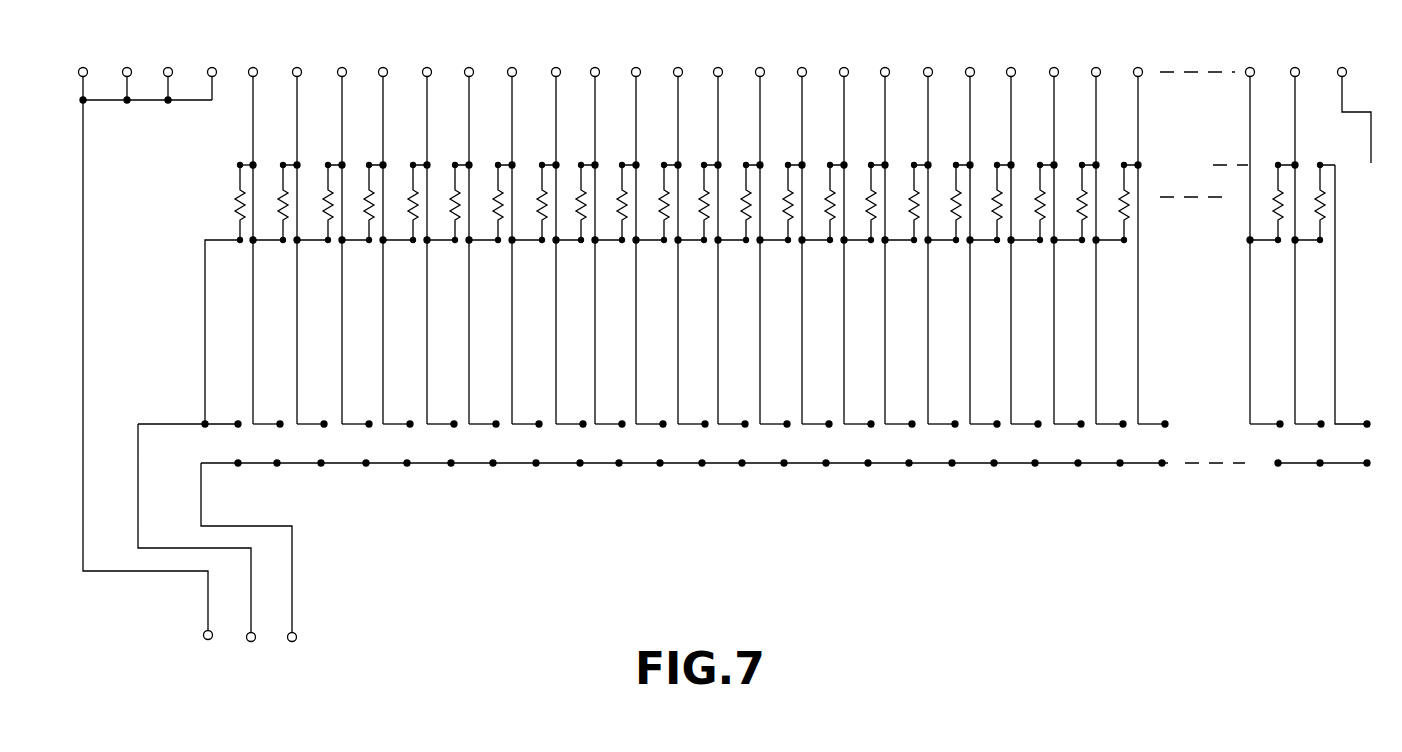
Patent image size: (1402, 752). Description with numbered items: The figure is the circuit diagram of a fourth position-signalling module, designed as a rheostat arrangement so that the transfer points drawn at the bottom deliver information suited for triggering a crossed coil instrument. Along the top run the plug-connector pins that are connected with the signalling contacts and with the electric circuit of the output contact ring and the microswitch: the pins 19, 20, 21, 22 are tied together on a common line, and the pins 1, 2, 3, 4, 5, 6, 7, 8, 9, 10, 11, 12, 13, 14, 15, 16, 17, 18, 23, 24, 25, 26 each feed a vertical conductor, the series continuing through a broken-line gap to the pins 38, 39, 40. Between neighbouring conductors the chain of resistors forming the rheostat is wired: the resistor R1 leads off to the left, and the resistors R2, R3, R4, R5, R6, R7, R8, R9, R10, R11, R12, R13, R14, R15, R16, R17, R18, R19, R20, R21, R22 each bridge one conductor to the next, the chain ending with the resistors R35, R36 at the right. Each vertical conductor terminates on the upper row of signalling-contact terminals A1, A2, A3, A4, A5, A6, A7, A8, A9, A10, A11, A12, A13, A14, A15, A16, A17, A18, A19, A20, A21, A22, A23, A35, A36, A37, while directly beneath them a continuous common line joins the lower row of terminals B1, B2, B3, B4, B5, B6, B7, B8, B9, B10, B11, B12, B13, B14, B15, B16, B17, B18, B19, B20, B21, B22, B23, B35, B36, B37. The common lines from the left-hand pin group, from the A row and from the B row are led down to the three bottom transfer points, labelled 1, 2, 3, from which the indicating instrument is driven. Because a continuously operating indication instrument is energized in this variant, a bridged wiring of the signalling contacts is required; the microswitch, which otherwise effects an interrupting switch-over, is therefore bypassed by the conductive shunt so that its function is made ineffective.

The pin 1 is at (230, 357).
The pin 2 is at (273, 357).
The pin 3 is at (316, 357).
The pin 4 is at (382, 233).
The pin 5 is at (426, 233).
The pin 6 is at (468, 233).
The pin 7 is at (511, 233).
The pin 8 is at (555, 233).
The pin 9 is at (594, 233).
The pin 10 is at (636, 233).
The pin 11 is at (678, 233).
The pin 12 is at (718, 233).
The pin 13 is at (760, 233).
The pin 14 is at (802, 233).
The pin 15 is at (844, 233).
The pin 16 is at (885, 233).
The pin 17 is at (928, 233).
The pin 18 is at (970, 233).
The pin 19 is at (141, 72).
The pin 20 is at (130, 72).
The pin 21 is at (170, 72).
The pin 22 is at (214, 71).
The pin 23 is at (1011, 233).
The pin 24 is at (1054, 233).
The pin 25 is at (1096, 233).
The pin 26 is at (1138, 233).
The pin 38 is at (1250, 233).
The pin 39 is at (1295, 233).
The pin 40 is at (1342, 59).
The resistor R1 is at (233, 203).
The resistor R2 is at (275, 203).
The resistor R3 is at (319, 203).
The resistor R4 is at (362, 203).
The resistor R5 is at (405, 203).
The resistor R6 is at (448, 203).
The resistor R7 is at (490, 203).
The resistor R8 is at (534, 203).
The resistor R9 is at (575, 203).
The resistor R10 is at (615, 203).
The resistor R11 is at (657, 203).
The resistor R12 is at (698, 203).
The resistor R13 is at (739, 203).
The resistor R14 is at (781, 203).
The resistor R15 is at (823, 203).
The resistor R16 is at (864, 203).
The resistor R17 is at (906, 203).
The resistor R18 is at (949, 203).
The resistor R19 is at (990, 203).
The resistor R20 is at (1032, 203).
The resistor R21 is at (1075, 203).
The resistor R22 is at (1117, 203).
The resistor R35 is at (1272, 203).
The resistor R36 is at (1315, 203).
The contact A1 is at (227, 413).
The contact A2 is at (268, 413).
The contact A3 is at (312, 413).
The contact A4 is at (357, 413).
The contact A5 is at (398, 413).
The contact A6 is at (442, 413).
The contact A7 is at (484, 413).
The contact A8 is at (527, 413).
The contact A9 is at (571, 413).
The contact A10 is at (617, 413).
The contact A11 is at (658, 413).
The contact A12 is at (700, 413).
The contact A13 is at (740, 413).
The contact A14 is at (782, 413).
The contact A15 is at (824, 413).
The contact A16 is at (866, 413).
The contact A17 is at (907, 413).
The contact A18 is at (950, 413).
The contact A19 is at (992, 413).
The contact A20 is at (1033, 413).
The contact A21 is at (1076, 413).
The contact A22 is at (1118, 413).
The contact A23 is at (1160, 413).
The contact A35 is at (1272, 413).
The contact A36 is at (1317, 413).
The contact A37 is at (1358, 413).
The contact B1 is at (227, 452).
The contact B2 is at (270, 452).
The contact B3 is at (314, 452).
The contact B4 is at (359, 452).
The contact B5 is at (400, 452).
The contact B6 is at (444, 452).
The contact B7 is at (486, 452).
The contact B8 is at (529, 452).
The contact B9 is at (573, 452).
The contact B10 is at (618, 452).
The contact B11 is at (659, 452).
The contact B12 is at (701, 452).
The contact B13 is at (741, 452).
The contact B14 is at (783, 452).
The contact B15 is at (825, 452).
The contact B16 is at (867, 452).
The contact B17 is at (908, 452).
The contact B18 is at (951, 452).
The contact B19 is at (993, 452).
The contact B20 is at (1034, 452).
The contact B21 is at (1077, 452).
The contact B22 is at (1119, 452).
The contact B23 is at (1161, 452).
The contact B35 is at (1273, 452).
The contact B36 is at (1318, 452).
The contact B37 is at (1358, 452).